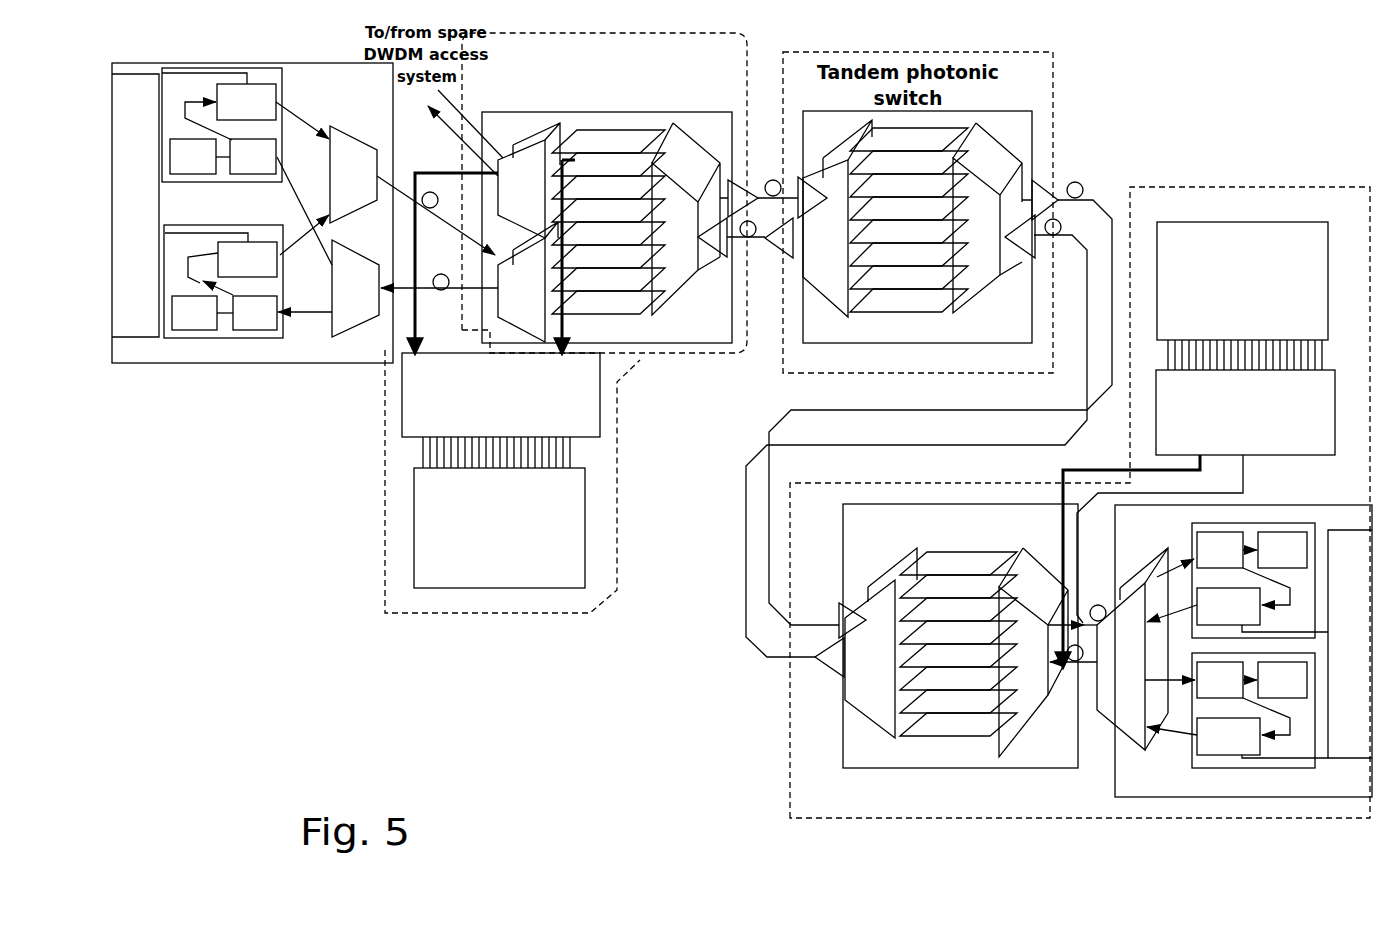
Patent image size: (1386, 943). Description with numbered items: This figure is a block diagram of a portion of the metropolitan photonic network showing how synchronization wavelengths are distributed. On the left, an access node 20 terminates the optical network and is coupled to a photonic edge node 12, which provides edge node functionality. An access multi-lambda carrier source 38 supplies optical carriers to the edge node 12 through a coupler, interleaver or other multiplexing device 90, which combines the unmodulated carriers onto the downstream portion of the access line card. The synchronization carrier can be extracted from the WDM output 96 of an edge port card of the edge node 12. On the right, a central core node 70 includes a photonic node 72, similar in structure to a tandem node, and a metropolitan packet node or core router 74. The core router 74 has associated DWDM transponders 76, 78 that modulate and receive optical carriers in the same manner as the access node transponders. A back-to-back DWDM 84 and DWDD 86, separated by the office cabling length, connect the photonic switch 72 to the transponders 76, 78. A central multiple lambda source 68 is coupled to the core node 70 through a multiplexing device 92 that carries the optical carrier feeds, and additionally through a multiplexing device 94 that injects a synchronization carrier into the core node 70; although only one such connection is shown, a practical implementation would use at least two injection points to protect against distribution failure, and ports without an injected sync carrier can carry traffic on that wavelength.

The access node 20 is at (322, 368).
The photonic edge node 12 is at (492, 292).
The multi-lambda carrier source 38 is at (485, 498).
The multiplexing device 90 is at (501, 395).
The WDM output 96 is at (568, 325).
The central multiple lambda source 68 is at (1188, 222).
The multiplexing device 92 is at (1247, 470).
The multiplexing device 94 is at (1157, 470).
The central core node 70 is at (792, 688).
The photonic node 72 is at (943, 656).
The DWDM 84 is at (993, 762).
The DWDD 86 is at (1128, 742).
The metropolitan packet node 74 is at (1243, 671).
The DWDM transponder 76 is at (1196, 533).
The DWDM transponder 78 is at (1196, 764).